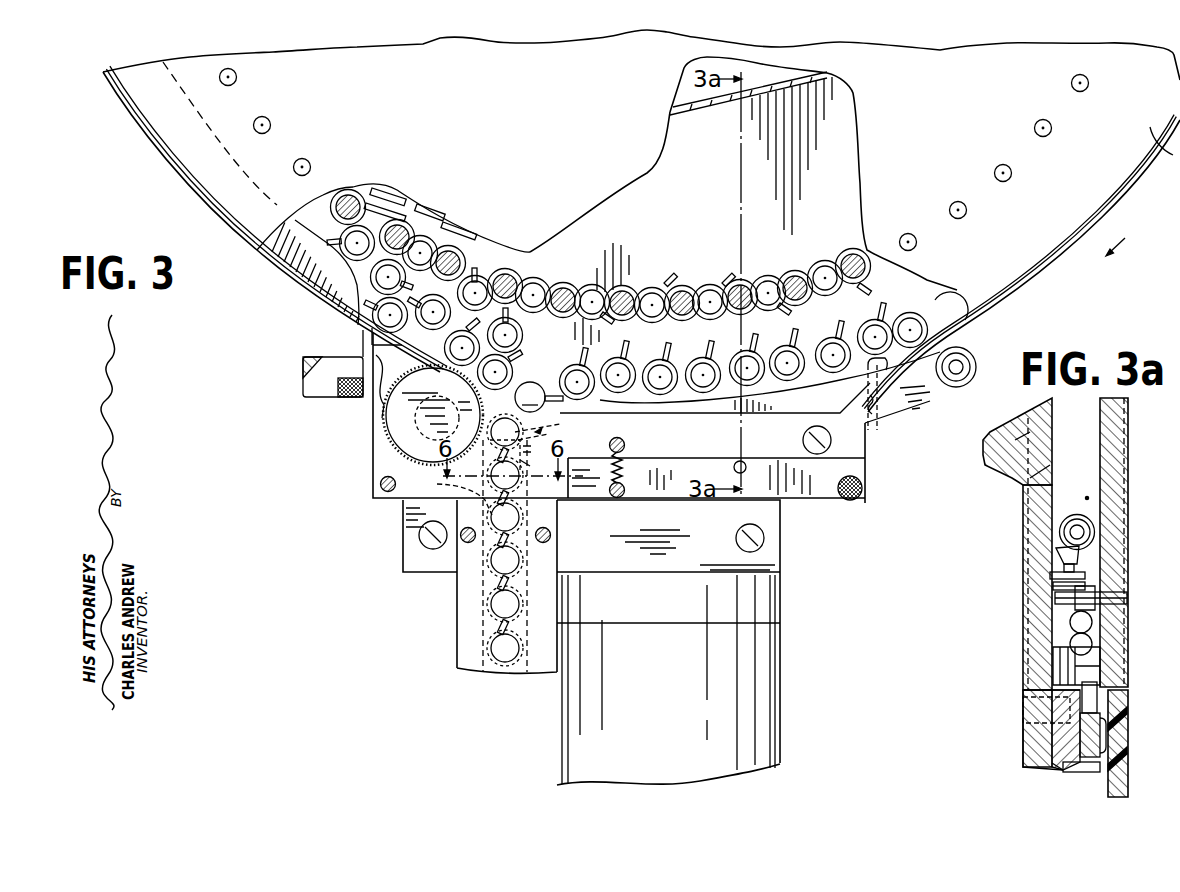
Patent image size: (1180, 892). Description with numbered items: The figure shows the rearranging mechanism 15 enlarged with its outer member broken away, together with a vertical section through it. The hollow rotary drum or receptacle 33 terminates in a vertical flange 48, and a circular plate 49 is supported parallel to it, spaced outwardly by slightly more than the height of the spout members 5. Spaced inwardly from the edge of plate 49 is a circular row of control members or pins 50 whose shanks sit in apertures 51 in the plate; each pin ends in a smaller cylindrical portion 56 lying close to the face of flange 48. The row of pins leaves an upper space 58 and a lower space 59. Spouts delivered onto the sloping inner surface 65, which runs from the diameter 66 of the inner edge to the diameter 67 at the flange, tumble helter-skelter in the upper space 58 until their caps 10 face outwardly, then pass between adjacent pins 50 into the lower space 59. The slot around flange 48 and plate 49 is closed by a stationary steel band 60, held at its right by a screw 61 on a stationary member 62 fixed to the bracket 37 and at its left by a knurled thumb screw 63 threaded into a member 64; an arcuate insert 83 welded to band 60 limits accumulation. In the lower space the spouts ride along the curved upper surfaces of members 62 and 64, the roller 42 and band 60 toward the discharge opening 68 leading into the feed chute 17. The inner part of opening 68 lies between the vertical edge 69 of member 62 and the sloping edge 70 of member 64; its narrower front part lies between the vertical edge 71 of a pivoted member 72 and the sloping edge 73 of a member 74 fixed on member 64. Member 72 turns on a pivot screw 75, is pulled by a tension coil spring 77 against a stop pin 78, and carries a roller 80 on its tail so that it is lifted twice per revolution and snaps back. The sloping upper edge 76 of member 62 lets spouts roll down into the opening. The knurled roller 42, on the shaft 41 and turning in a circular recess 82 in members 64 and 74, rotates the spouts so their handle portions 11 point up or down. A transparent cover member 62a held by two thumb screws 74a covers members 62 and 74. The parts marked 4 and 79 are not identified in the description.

In FIG. 3, the bowl 4 is at (1165, 146).
In FIG. 3, the spout member 5 is at (388, 198).
In FIG. 3A, the spout member 5 is at (1092, 548).
In FIG. 3, the cap 10 is at (539, 397).
In FIG. 3, the handle portion 11 is at (672, 355).
In FIG. 3, the rearranging mechanism 15 is at (162, 148).
In FIG. 3, the feed chute 17 is at (465, 632).
In FIG. 3A, the rotary drum 33 is at (1010, 470).
In FIG. 3, the bracket 37 is at (752, 672).
In FIG. 3, the shaft 41 is at (382, 413).
In FIG. 3, the roller 42 is at (396, 425).
In FIG. 3A, the vertical flange 48 is at (1031, 516).
In FIG. 3A, the circular plate 49 is at (1112, 464).
In FIG. 3, the control member 50 is at (742, 280).
In FIG. 3A, the control member 50 is at (1122, 599).
In FIG. 3, the aperture 51 is at (1028, 150).
In FIG. 3A, the cylindrical portion 56 is at (1052, 597).
In FIG. 3, the upper space 58 is at (766, 235).
In FIG. 3A, the upper space 58 is at (1088, 498).
In FIG. 3A, the lower space 59 is at (1060, 624).
In FIG. 3, the steel band 60 is at (195, 204).
In FIG. 3A, the steel band 60 is at (1125, 636).
In FIG. 3, the screw 61 is at (880, 388).
In FIG. 3A, the screw 61 is at (1023, 716).
In FIG. 3, the stationary member 62 is at (867, 475).
In FIG. 3A, the stationary member 62 is at (1053, 765).
In FIG. 3A, the cover member 62a is at (1118, 766).
In FIG. 3, the knurled thumb screw 63 is at (312, 389).
In FIG. 3, the member 64 is at (376, 380).
In FIG. 3, the inner surface 65 is at (642, 183).
In FIG. 3A, the inner edge diameter 66 is at (1020, 441).
In FIG. 3, the flange intersection diameter 67 is at (709, 108).
In FIG. 3A, the flange intersection diameter 67 is at (1046, 477).
In FIG. 3, the discharge opening 68 is at (492, 440).
In FIG. 3, the vertical edge 69 is at (539, 449).
In FIG. 3, the sloping edge 70 is at (471, 556).
In FIG. 3, the vertical edge 71 is at (548, 428).
In FIG. 3, the pivoted member 72 is at (638, 450).
In FIG. 3, the sloping edge 73 is at (537, 462).
In FIG. 3, the member 74 is at (382, 458).
In FIG. 3, the thumb screw 74a is at (377, 493).
In FIG. 3, the pivot screw 75 is at (829, 443).
In FIG. 3A, the pivot screw 75 is at (1106, 736).
In FIG. 3, the upper edge 76 is at (600, 400).
In FIG. 3, the tension coil spring 77 is at (610, 477).
In FIG. 3, the stop pin 78 is at (744, 472).
In FIG. 3A, the stop pin 78 is at (1082, 774).
In FIG. 3, the plate 79 is at (918, 410).
In FIG. 3A, the plate 79 is at (1090, 700).
In FIG. 3, the roller 80 is at (971, 353).
In FIG. 3, the circular recess 82 is at (414, 378).
In FIG. 3, the arcuate insert 83 is at (307, 207).